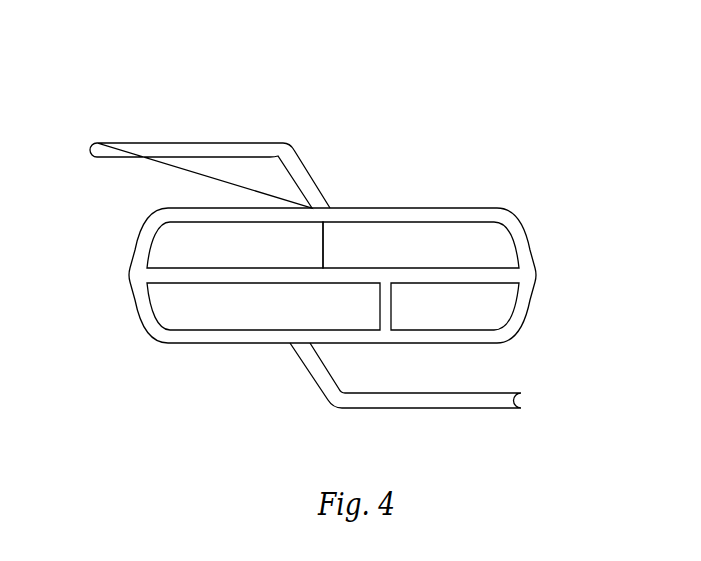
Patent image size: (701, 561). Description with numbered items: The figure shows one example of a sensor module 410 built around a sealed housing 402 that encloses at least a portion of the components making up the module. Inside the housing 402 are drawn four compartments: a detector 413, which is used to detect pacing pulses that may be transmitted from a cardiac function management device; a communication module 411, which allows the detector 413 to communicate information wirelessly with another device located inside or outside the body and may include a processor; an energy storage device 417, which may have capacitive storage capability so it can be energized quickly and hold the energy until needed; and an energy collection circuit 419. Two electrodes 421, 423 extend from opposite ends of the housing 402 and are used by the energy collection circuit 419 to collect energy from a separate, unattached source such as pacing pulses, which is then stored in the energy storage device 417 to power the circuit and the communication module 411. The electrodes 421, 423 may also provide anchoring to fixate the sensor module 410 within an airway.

The sensor module 410 is at (466, 115).
The sealed housing 402 is at (522, 236).
The communication module 411 is at (413, 222).
The detector 413 is at (237, 223).
The energy storage device 417 is at (273, 329).
The energy collection circuit 419 is at (443, 329).
The electrode 421 is at (310, 177).
The electrode 423 is at (496, 393).